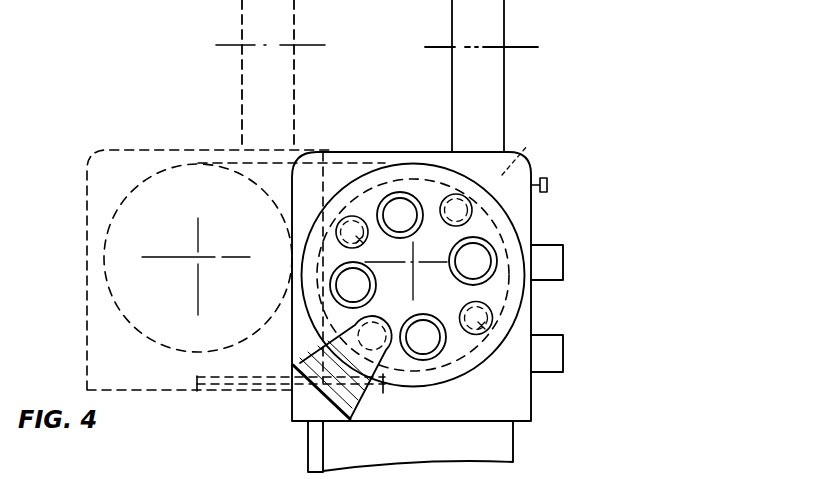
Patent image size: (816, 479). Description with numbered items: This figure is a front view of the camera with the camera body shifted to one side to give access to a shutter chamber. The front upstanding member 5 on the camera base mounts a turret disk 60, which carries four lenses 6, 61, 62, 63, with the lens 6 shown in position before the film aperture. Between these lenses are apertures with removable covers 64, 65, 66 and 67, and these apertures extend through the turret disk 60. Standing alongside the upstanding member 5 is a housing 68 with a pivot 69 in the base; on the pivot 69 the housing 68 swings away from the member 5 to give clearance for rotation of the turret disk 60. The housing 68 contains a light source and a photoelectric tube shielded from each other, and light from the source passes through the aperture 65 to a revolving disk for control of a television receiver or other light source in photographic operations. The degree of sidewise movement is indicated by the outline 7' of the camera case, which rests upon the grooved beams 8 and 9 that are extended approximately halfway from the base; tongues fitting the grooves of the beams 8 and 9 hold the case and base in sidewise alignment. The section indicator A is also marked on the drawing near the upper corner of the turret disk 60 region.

The front upstanding member 5 is at (520, 202).
The lens 6 is at (473, 251).
The outline of camera case 7' is at (215, 270).
The grooved beam 8 is at (243, 392).
The grooved beam 9 is at (268, 392).
The turret disk 60 is at (512, 294).
The lens 61 is at (420, 327).
The lens 62 is at (360, 283).
The lens 63 is at (402, 203).
The aperture and removable cover 64 is at (483, 335).
The aperture and removable cover 65 is at (357, 356).
The aperture and removable cover 66 is at (360, 240).
The aperture and removable cover 67 is at (455, 223).
The housing 68 is at (375, 358).
The pivot 69 is at (360, 408).
The section indicator A is at (520, 150).